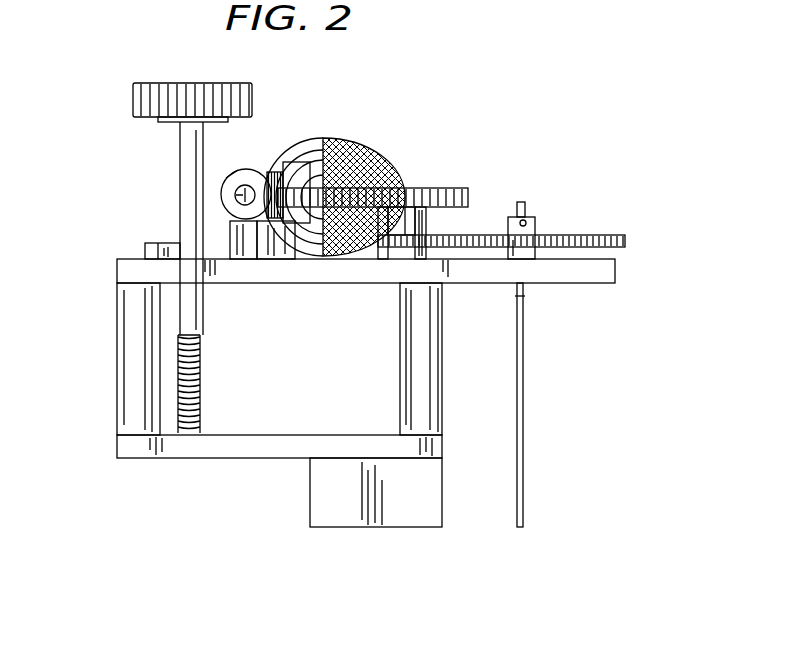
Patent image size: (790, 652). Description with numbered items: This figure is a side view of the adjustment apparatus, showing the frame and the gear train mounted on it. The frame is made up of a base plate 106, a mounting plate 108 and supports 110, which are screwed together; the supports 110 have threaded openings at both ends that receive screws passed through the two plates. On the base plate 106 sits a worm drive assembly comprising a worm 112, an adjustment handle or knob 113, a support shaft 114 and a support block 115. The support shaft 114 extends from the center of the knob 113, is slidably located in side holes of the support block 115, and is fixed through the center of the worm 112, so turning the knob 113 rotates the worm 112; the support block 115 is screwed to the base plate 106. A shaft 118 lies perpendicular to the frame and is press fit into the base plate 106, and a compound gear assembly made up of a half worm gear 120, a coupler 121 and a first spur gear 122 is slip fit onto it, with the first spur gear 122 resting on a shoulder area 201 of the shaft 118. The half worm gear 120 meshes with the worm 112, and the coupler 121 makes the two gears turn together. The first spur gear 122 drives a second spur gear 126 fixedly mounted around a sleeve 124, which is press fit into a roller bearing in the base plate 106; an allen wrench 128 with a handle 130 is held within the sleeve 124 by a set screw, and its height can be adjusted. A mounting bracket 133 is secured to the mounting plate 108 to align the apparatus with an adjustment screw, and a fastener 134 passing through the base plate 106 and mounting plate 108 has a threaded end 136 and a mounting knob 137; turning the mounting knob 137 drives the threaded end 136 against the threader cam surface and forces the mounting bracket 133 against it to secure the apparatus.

The base plate 106 is at (118, 266).
The mounting plate 108 is at (117, 447).
The supports 110 is at (117, 362).
The worm 112 is at (285, 171).
The adjustment handle or knob 113 is at (338, 141).
The support shaft 114 is at (236, 195).
The support block 115 is at (145, 247).
The shaft 118 is at (384, 162).
The half worm gear 120 is at (413, 188).
The coupler 121 is at (428, 221).
The first spur gear 122 is at (480, 247).
The sleeve 124 is at (548, 258).
The second spur gear 126 is at (627, 242).
The allen wrench 128 is at (523, 490).
The handle 130 is at (524, 296).
The mounting bracket 133 is at (312, 497).
The fastener 134 is at (181, 218).
The threaded end 136 is at (187, 434).
The mounting knob 137 is at (133, 100).
The shoulder area 201 is at (491, 236).